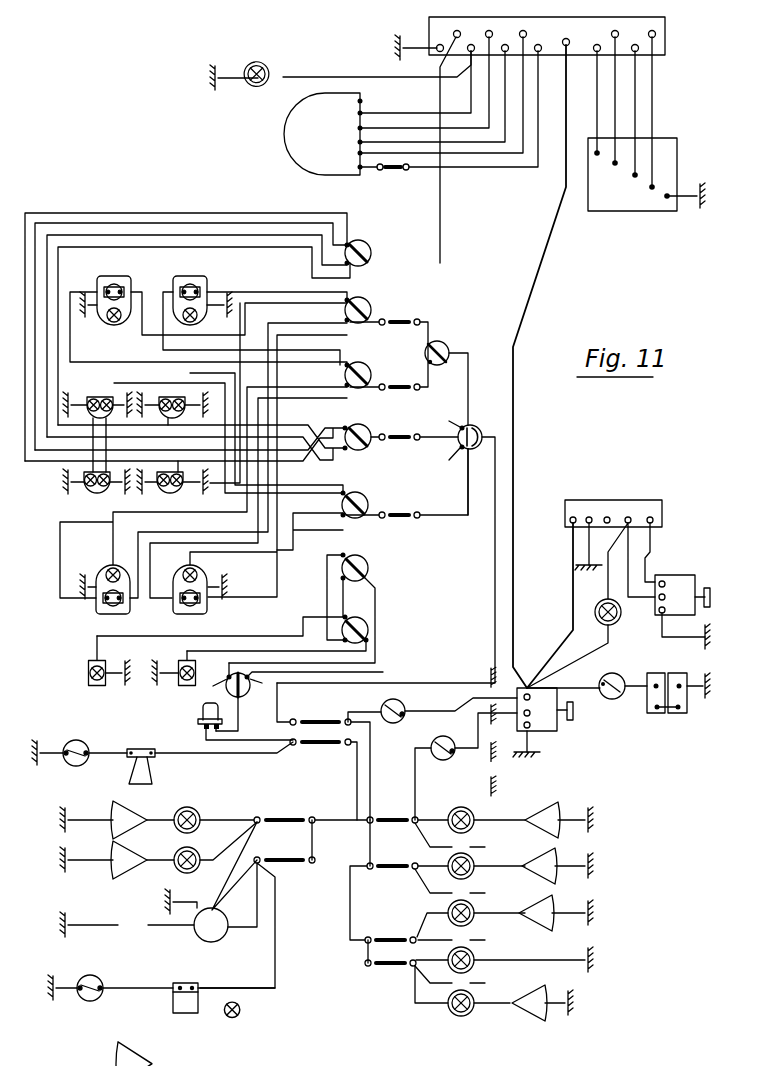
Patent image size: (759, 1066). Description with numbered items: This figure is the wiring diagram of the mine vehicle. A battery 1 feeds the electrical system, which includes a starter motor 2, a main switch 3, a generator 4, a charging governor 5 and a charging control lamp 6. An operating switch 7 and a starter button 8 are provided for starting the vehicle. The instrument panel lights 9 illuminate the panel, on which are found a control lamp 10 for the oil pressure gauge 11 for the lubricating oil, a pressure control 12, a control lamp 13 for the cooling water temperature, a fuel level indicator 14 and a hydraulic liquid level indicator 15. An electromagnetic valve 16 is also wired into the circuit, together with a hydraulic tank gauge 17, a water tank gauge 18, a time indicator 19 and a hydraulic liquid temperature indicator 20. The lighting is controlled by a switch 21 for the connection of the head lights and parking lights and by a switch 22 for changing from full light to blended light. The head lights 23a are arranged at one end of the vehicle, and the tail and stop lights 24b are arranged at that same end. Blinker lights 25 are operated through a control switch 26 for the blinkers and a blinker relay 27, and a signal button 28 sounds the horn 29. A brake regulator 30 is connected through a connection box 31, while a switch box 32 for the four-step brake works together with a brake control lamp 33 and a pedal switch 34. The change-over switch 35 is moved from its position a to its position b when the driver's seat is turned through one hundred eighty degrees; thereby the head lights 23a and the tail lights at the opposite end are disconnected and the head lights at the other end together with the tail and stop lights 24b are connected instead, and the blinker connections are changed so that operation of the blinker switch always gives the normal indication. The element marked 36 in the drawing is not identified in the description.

The battery 1 is at (672, 717).
The starter motor 2 is at (547, 731).
The main switch 3 is at (613, 699).
The generator 4 is at (665, 576).
The charging governor 5 is at (663, 509).
The charging control lamp 6 is at (621, 616).
The operating switch 7 is at (402, 718).
The starter button 8 is at (452, 757).
The instrument panel lights 9 is at (330, 830).
The control lamp for oil pressure gauge 10 is at (197, 810).
The oil pressure gauge 11 is at (541, 994).
The pressure control 12 is at (140, 848).
The control lamp for cooling water temperature 13 is at (197, 855).
The fuel level indicator 14 is at (214, 943).
The hydraulic liquid level indicator 15 is at (543, 907).
The electromagnetic valve 16 is at (193, 1013).
The hydraulic tank gauge 17 is at (447, 862).
The water tank gauge 18 is at (446, 909).
The time indicator 19 is at (478, 958).
The hydraulic liquid temperature indicator 20 is at (472, 1013).
The switch for connection of head lights and parking lights 21 is at (479, 426).
The switch for changing from full light to blended light 22 is at (450, 344).
The head lights 23a is at (238, 622).
The tail and stop lights 24b is at (190, 503).
The blinker lights 25 is at (168, 698).
The control switch for the blinkers 26 is at (250, 698).
The blinker relay 27 is at (198, 716).
The signal button 28 is at (72, 763).
The horn 29 is at (152, 767).
The brake regulator 30 is at (283, 127).
The connection box 31 is at (666, 30).
The switch box for four-step brake 32 is at (628, 211).
The brake control lamp 33 is at (283, 65).
The pedal switch 34 is at (95, 1002).
The change-over switch 35 is at (367, 645).
The indicator lamp 36 is at (477, 808).